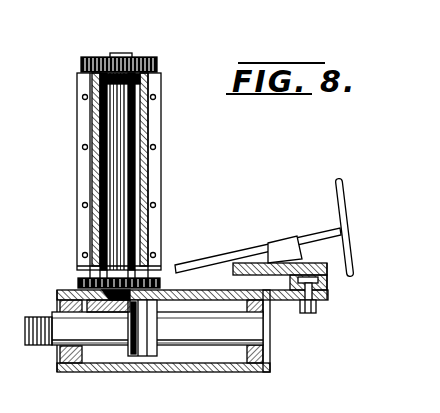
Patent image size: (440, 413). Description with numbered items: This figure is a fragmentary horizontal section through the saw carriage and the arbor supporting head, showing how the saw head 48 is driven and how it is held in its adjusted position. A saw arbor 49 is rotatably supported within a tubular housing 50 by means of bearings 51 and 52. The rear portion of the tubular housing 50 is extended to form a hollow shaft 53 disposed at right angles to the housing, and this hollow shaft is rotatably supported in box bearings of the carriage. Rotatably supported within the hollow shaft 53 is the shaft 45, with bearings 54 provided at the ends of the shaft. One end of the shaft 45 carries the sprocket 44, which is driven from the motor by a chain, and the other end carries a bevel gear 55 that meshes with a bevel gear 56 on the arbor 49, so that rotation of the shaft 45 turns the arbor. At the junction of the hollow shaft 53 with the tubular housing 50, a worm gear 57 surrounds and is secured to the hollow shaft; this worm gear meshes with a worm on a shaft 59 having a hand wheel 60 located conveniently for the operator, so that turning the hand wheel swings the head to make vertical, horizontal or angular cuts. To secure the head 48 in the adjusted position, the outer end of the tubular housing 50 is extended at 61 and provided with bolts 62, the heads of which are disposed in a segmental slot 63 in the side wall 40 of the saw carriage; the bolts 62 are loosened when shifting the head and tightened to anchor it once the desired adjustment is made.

The side wall 40 is at (254, 261).
The sprocket 44 is at (143, 57).
The shaft 45 is at (113, 128).
The saw head 48 is at (182, 372).
The saw arbor 49 is at (113, 330).
The tubular housing 50 is at (248, 372).
The bearing 51 is at (268, 360).
The bearing 52 is at (58, 358).
The hollow shaft 53 is at (150, 117).
The bearings 54 is at (137, 83).
The bevel gear 55 is at (115, 308).
The bevel gear 56 is at (148, 335).
The worm gear 57 is at (167, 278).
The shaft 59 is at (225, 256).
The hand wheel 60 is at (338, 197).
The extension of tubular housing 61 is at (290, 302).
The bolts 62 is at (317, 313).
The segmental slot 63 is at (309, 277).